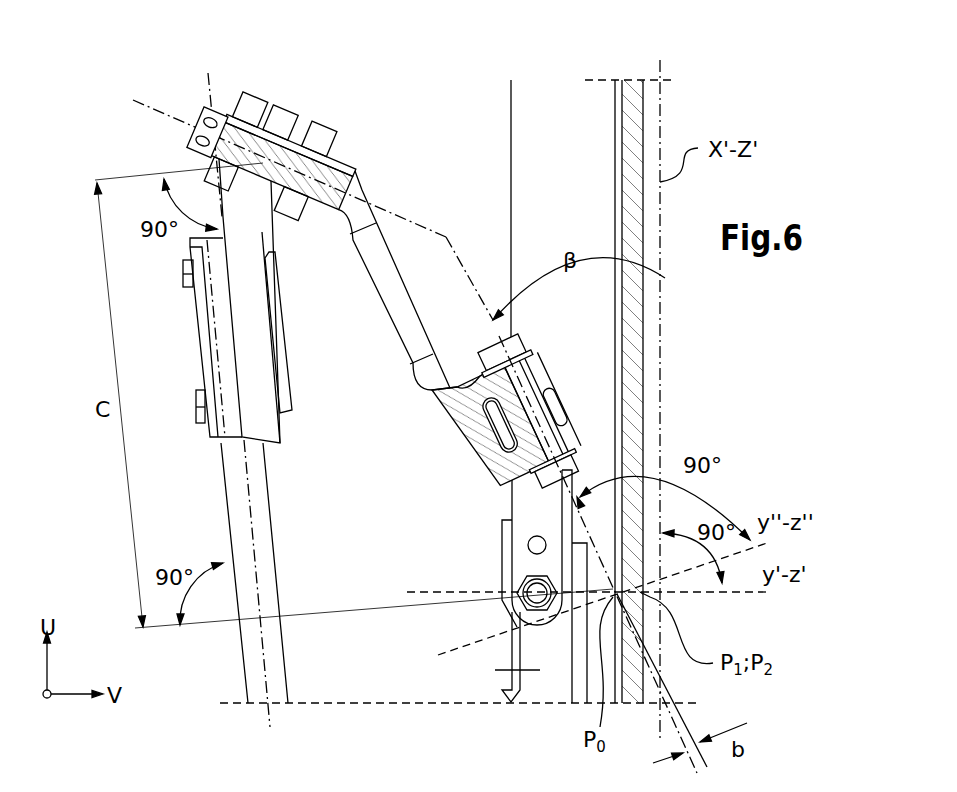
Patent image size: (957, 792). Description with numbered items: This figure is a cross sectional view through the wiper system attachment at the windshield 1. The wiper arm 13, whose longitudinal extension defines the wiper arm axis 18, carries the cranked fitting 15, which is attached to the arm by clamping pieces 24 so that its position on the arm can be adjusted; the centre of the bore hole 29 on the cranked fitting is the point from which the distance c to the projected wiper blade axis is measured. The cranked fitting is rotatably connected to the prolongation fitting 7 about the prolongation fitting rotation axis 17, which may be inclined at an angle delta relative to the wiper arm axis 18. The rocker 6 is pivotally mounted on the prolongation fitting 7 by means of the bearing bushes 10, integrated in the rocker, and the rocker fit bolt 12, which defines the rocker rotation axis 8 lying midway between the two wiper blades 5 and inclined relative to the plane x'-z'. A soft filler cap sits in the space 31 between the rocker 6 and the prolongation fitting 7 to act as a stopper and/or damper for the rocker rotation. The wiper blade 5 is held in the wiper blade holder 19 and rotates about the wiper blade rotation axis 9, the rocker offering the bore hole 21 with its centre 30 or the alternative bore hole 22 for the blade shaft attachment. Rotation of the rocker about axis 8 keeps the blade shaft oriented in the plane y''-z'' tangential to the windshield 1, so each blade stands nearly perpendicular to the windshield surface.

The windshield 1 is at (632, 80).
The wiper blade 5 is at (533, 113).
The rocker 6 is at (528, 503).
The prolongation fitting 7 is at (447, 403).
The rocker rotation axis 8 is at (455, 252).
The wiper blade rotation axis 9 is at (494, 586).
The bore hole on the rocker for wiper blade attachment 21 is at (515, 597).
The bearing bushes on the rocker 10 is at (547, 410).
The rocker fit bolt 12 is at (520, 373).
The wiper arm 13 is at (243, 657).
The cranked fitting 15 is at (253, 327).
The prolongation fitting rotation axis 17 is at (150, 103).
The wiper arm axis 18 is at (247, 518).
The wiper blade holder 19 is at (495, 670).
The alternative bore hole on the rocker for wiper blade attachment 22 is at (537, 543).
The clamping piece 24 is at (217, 440).
The centre of the bore hole on the cranked fitting 29 is at (277, 153).
The centre of the bore hole on the rocker 30 is at (493, 413).
The space for the installation of a soft filler cap 31 is at (474, 435).